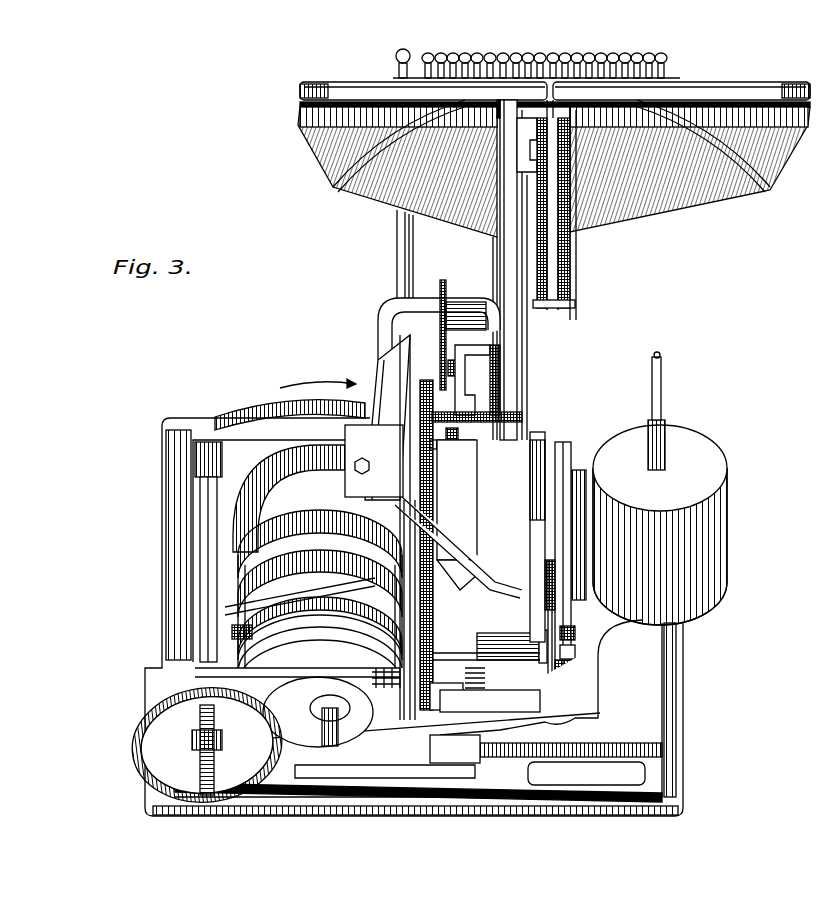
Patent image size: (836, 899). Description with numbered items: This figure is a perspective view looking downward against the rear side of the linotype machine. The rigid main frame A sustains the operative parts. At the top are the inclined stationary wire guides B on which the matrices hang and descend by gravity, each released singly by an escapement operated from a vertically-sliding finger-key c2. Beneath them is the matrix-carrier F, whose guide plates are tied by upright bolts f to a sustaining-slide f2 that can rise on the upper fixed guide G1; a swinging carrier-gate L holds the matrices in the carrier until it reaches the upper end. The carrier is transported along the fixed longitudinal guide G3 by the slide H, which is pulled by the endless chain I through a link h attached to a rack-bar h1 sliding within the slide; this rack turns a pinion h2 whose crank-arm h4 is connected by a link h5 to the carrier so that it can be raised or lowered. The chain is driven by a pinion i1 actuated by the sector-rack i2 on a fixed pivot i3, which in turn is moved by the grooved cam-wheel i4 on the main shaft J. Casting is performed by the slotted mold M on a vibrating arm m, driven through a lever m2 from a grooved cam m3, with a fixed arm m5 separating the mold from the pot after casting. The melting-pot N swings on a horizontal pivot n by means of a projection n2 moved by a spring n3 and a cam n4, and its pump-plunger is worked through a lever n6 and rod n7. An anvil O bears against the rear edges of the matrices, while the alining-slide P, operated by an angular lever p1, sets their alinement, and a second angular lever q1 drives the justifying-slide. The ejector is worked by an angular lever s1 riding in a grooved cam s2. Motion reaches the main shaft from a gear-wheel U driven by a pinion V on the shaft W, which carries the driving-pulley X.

The finger-key c2 is at (662, 72).
The wire guides B is at (773, 180).
The upright bolts f is at (558, 103).
The carrier-sustaining slide f2 is at (462, 200).
The crank-arm h4 is at (519, 323).
The upper fixed guide G1 is at (499, 251).
The matrix-carrier F is at (553, 288).
The link h5 is at (526, 270).
The carrier-gate L is at (585, 245).
The endless chain I is at (443, 283).
The pinion i1 is at (397, 310).
The link h is at (452, 370).
The longitudinal guide G3 is at (492, 356).
The rack-bar h1 is at (464, 388).
The slide H is at (468, 422).
The pinion h2 is at (457, 432).
The main frame A is at (520, 488).
The pinion V is at (194, 452).
The shaft W is at (196, 522).
The gear-wheel U is at (276, 406).
The grooved cam s2 is at (290, 470).
The grooved cam-wheel i4 is at (257, 610).
The grooved cam m3 is at (231, 633).
The sector-rack i2 is at (435, 497).
The angular lever s1 is at (443, 557).
The fixed pivot i3 is at (477, 640).
The anvil O is at (538, 433).
The mold M is at (568, 467).
The alining-slide P is at (545, 564).
The vibrating arm m is at (565, 603).
The angular lever q1 is at (577, 633).
The angular lever p1 is at (574, 653).
The fixed arm m5 is at (575, 667).
The horizontal pivot n is at (555, 710).
The lever m2 is at (458, 666).
The spring n3 is at (489, 696).
The main shaft J is at (348, 741).
The arm or projection n2 is at (456, 730).
The cam n4 is at (331, 707).
The driving-pulley X is at (165, 705).
The melting-pot N is at (660, 525).
The lever n6 is at (667, 412).
The rod n7 is at (655, 382).